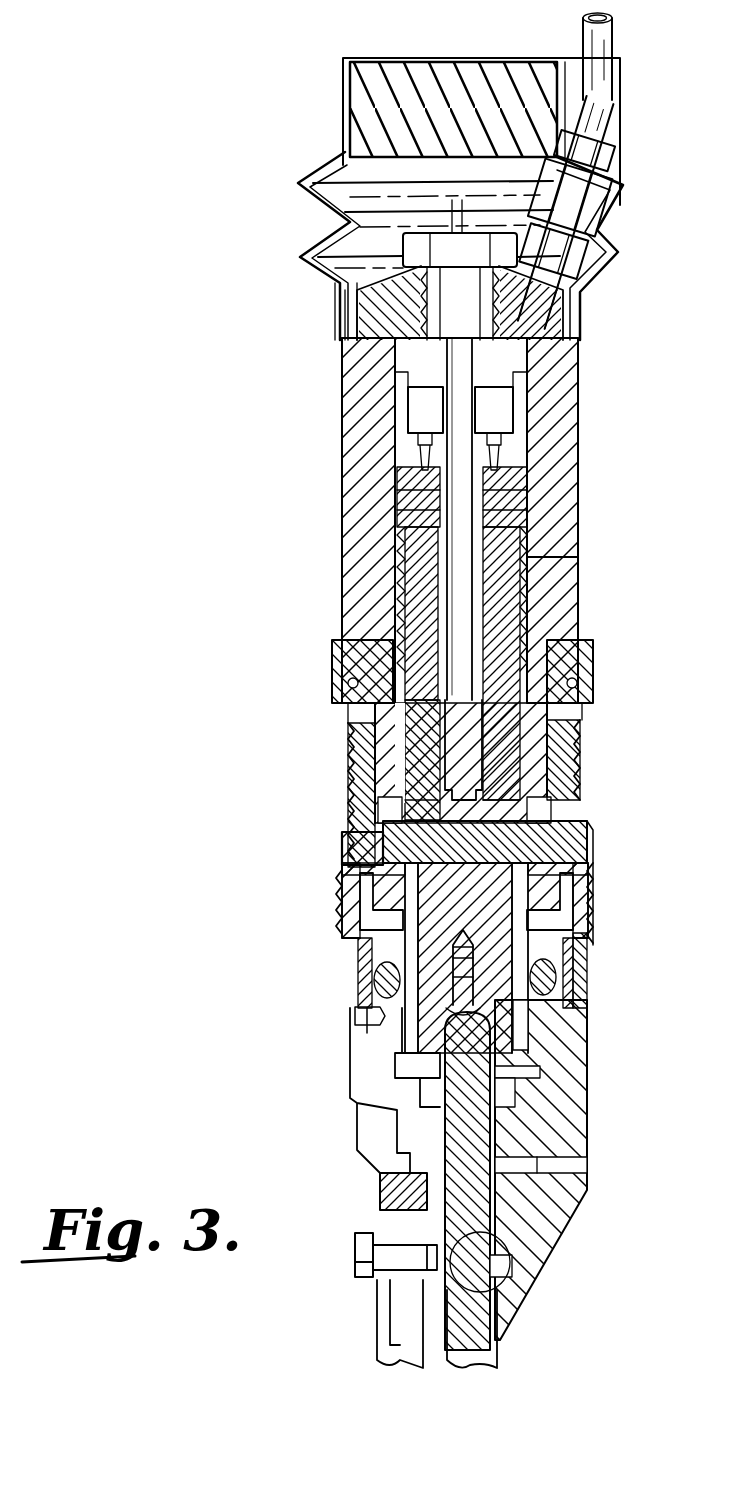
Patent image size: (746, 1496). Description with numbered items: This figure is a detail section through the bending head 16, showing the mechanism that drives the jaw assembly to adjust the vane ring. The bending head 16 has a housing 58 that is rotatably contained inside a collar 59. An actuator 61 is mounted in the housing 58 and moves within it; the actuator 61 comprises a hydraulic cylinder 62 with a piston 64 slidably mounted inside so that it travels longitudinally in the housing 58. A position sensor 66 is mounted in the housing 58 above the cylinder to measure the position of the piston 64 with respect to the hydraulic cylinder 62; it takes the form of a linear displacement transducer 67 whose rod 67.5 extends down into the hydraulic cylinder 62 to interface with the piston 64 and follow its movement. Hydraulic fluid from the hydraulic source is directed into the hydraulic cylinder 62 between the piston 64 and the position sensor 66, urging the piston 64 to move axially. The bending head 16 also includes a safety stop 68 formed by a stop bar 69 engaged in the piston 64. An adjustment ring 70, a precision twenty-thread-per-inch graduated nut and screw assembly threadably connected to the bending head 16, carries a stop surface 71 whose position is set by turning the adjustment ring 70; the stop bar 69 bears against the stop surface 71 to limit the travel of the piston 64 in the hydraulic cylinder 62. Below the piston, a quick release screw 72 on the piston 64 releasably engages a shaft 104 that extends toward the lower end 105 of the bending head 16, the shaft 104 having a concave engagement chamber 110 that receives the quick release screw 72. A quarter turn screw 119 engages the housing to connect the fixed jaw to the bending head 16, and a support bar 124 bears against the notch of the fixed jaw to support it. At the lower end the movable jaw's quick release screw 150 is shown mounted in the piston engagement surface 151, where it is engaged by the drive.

The bending head 16 is at (560, 460).
The housing 58 is at (557, 497).
The collar 59 is at (595, 670).
The actuator 61 is at (420, 560).
The hydraulic cylinder 62 is at (430, 520).
The piston 64 is at (525, 530).
The position sensor 66 is at (440, 300).
The linear displacement transducer 67 is at (475, 318).
The rod 67.5 is at (460, 420).
The safety stop 68 is at (614, 858).
The stop bar 69 is at (347, 853).
The adjustment ring 70 is at (580, 755).
The stop surface 71 is at (553, 840).
The quick release screw 72 is at (478, 1000).
The shaft 104 is at (470, 1130).
The lower end 105 is at (585, 1205).
The concave engagement chamber 110 is at (520, 1065).
The quarter turn screw 119 is at (352, 1255).
The support bar 124 is at (382, 1195).
The quick release screw 150 is at (480, 1318).
The piston engagement surface 151 is at (505, 1240).